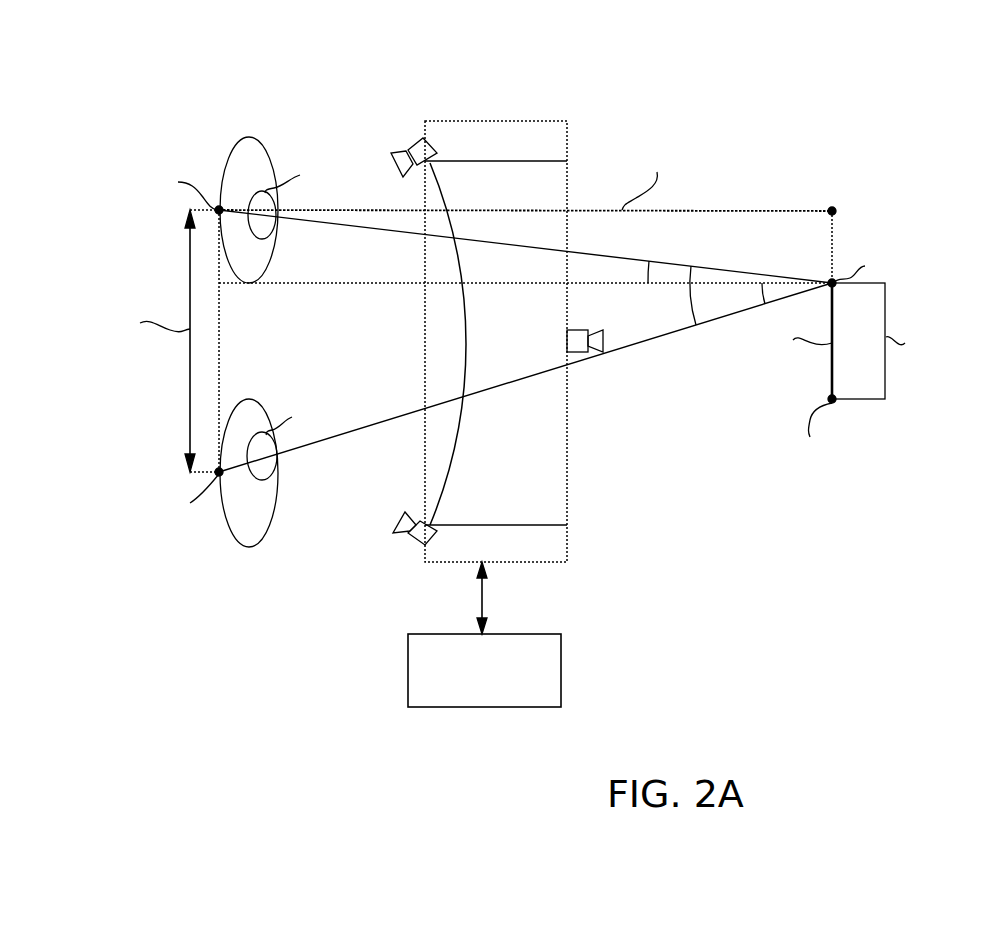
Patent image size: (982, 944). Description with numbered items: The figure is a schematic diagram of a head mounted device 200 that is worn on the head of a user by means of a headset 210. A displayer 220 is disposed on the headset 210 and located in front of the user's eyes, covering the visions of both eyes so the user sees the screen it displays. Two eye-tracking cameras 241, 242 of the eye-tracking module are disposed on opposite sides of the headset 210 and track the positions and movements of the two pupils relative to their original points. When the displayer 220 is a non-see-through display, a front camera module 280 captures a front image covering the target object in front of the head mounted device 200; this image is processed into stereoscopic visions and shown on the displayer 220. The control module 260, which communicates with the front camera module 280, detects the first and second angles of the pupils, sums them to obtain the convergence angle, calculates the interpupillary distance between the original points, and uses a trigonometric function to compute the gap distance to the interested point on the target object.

The head mounted device 200 is at (165, 38).
The headset 210 is at (493, 120).
The displayer 220 is at (465, 345).
The eye-tracking camera 241 is at (422, 139).
The eye-tracking camera 242 is at (427, 547).
The control module 260 is at (561, 658).
The front camera module 280 is at (580, 352).